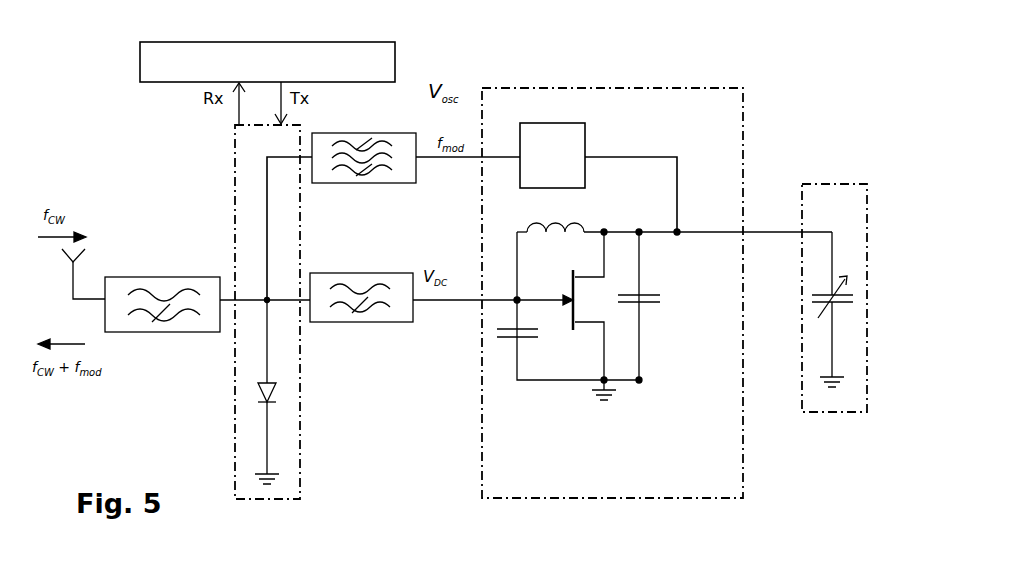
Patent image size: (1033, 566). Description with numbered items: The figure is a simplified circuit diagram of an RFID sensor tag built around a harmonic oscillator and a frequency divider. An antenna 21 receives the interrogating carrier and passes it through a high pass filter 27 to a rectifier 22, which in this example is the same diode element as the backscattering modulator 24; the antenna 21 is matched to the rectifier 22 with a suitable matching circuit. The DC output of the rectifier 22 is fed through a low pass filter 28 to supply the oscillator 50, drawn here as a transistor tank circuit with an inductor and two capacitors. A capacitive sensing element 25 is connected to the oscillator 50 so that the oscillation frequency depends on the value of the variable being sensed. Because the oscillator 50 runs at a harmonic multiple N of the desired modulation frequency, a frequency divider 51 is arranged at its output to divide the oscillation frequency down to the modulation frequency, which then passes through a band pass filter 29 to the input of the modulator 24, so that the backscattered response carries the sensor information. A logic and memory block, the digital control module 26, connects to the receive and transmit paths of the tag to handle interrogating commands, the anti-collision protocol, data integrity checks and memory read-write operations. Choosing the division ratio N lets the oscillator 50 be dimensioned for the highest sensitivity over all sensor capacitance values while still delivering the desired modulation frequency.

The antenna 21 is at (74, 274).
The rectifier 22 is at (268, 335).
The modulator 24 is at (292, 500).
The sensing element 25 is at (843, 184).
The digital control module 26 is at (140, 50).
The high pass filter 27 is at (137, 334).
The low pass filter 28 is at (372, 323).
The band pass filter 29 is at (373, 133).
The oscillator 50 is at (612, 275).
The frequency divider 51 is at (570, 123).